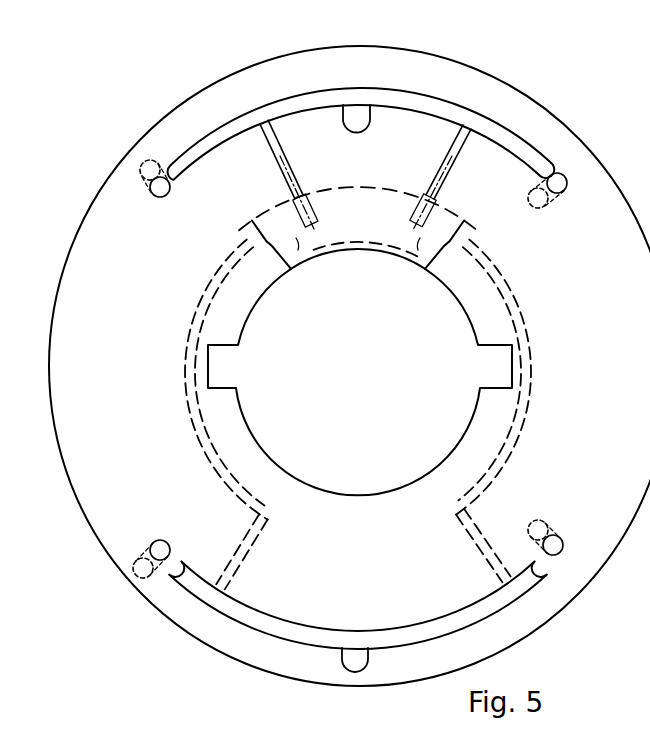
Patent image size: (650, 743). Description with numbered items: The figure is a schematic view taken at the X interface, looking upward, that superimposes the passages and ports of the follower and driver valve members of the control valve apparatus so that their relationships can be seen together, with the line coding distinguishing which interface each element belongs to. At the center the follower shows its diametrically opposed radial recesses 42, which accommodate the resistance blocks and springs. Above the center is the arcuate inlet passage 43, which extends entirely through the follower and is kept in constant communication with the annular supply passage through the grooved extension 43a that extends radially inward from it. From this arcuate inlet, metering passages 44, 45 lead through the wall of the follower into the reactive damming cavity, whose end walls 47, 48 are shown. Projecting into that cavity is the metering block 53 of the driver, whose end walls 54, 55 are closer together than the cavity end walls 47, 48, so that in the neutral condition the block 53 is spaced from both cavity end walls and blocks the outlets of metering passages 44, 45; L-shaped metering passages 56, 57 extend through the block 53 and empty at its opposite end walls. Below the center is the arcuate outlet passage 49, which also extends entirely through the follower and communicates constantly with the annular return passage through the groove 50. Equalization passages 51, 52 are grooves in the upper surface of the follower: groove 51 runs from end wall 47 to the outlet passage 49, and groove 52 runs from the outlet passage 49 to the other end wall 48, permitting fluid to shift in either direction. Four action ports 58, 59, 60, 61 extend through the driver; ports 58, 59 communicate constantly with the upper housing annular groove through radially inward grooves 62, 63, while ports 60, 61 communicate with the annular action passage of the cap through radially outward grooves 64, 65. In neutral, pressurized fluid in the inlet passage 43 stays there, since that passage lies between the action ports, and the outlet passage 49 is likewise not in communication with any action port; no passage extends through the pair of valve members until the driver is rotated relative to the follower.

The radial recesses 42 is at (513, 357).
The arcuate inlet passage 43 is at (297, 105).
The grooved extension 43a is at (343, 110).
The metering passage 44 is at (272, 162).
The metering passage 45 is at (443, 167).
The end wall 47 is at (256, 230).
The end wall 48 is at (470, 240).
The arcuate outlet passage 49 is at (406, 631).
The groove 50 is at (366, 664).
The equalization passage 51 is at (188, 385).
The equalization passage 52 is at (527, 392).
The metering block 53 is at (362, 218).
The end wall 54 is at (268, 254).
The end wall 55 is at (447, 270).
The metering passage 56 is at (305, 252).
The metering passage 57 is at (414, 258).
The action port 58 is at (563, 540).
The action port 59 is at (558, 174).
The action port 60 is at (170, 192).
The action port 61 is at (160, 540).
The groove 62 is at (540, 521).
The groove 63 is at (548, 207).
The groove 64 is at (153, 160).
The groove 65 is at (147, 578).